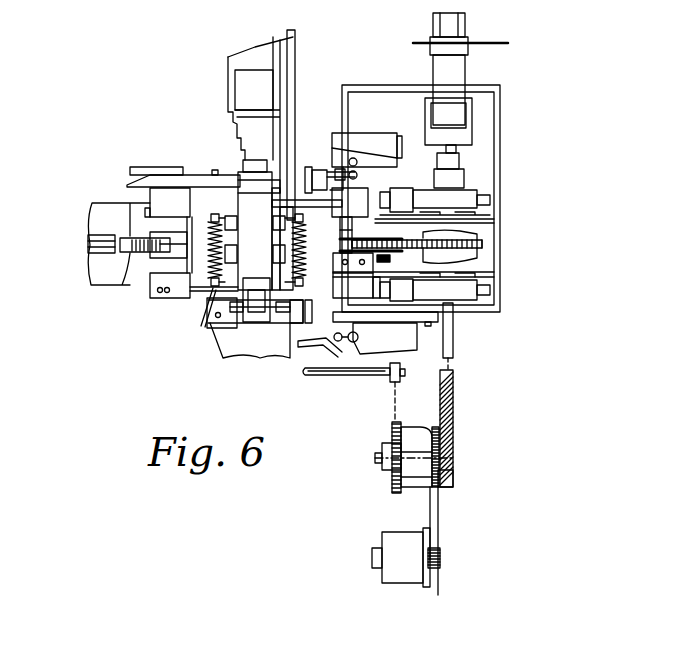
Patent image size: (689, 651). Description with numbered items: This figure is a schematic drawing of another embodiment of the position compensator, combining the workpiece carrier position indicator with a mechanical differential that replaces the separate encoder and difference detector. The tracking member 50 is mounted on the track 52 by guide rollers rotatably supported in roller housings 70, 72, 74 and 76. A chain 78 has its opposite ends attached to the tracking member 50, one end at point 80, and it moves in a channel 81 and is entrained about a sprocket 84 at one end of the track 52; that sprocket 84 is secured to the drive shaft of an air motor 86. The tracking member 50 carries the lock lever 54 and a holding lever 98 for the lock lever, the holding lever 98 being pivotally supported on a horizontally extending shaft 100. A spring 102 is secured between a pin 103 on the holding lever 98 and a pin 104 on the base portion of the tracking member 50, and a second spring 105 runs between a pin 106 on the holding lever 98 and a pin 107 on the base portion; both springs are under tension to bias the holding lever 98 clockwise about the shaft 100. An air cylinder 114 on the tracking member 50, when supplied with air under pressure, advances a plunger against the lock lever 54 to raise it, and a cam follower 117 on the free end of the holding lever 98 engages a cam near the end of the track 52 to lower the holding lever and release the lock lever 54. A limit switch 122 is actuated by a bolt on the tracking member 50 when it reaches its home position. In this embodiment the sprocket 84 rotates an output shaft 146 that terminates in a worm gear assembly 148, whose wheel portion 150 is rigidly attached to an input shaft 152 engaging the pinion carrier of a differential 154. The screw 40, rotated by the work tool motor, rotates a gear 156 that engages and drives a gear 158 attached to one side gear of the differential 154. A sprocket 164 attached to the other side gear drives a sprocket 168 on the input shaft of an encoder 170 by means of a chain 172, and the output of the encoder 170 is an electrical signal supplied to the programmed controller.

The screw 40 is at (334, 376).
The tracking member 50 is at (186, 156).
The track 52 is at (112, 202).
The lock lever 54 is at (245, 362).
The roller housing 70 is at (158, 195).
The roller housing 72 is at (185, 292).
The roller housing 74 is at (397, 192).
The roller housing 76 is at (365, 285).
The chain 78 is at (132, 254).
The attachment point 80 is at (367, 240).
The channel 81 is at (90, 242).
The sprocket 84 is at (483, 240).
The air motor 86 is at (452, 80).
The holding lever 98 is at (250, 268).
The shaft 100 is at (275, 256).
The spring 102 is at (210, 247).
The pin 103 is at (201, 326).
The pin 104 is at (225, 213).
The second spring 105 is at (292, 290).
The pin 106 is at (303, 197).
The pin 107 is at (302, 283).
The air cylinder 114 is at (242, 95).
The cam follower 117 is at (245, 167).
The limit switch 122 is at (345, 152).
The output shaft 146 is at (453, 335).
The worm gear assembly 148 is at (458, 447).
The wheel portion 150 is at (447, 476).
The input shaft 152 is at (375, 457).
The differential 154 is at (418, 473).
The gear 156 is at (393, 380).
The gear 158 is at (392, 473).
The sprocket 164 is at (438, 428).
The sprocket 168 is at (438, 560).
The encoder 170 is at (407, 585).
The chain 172 is at (440, 518).